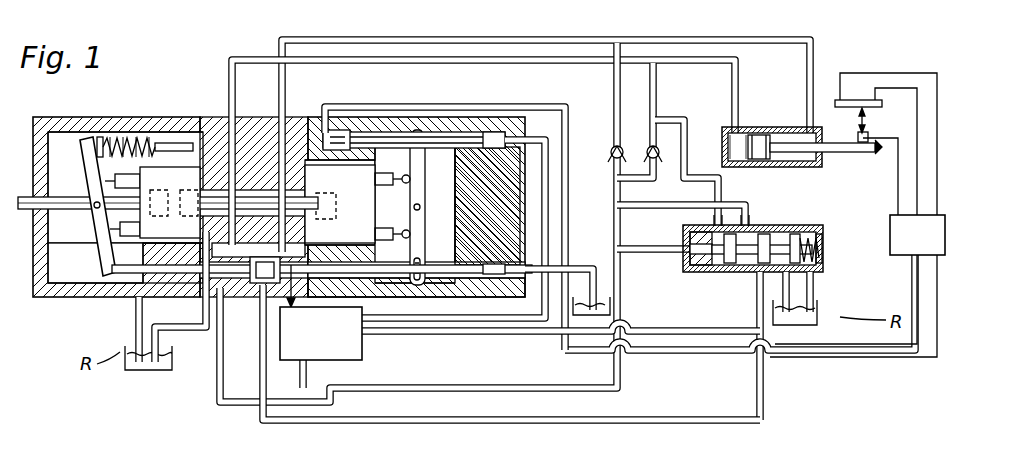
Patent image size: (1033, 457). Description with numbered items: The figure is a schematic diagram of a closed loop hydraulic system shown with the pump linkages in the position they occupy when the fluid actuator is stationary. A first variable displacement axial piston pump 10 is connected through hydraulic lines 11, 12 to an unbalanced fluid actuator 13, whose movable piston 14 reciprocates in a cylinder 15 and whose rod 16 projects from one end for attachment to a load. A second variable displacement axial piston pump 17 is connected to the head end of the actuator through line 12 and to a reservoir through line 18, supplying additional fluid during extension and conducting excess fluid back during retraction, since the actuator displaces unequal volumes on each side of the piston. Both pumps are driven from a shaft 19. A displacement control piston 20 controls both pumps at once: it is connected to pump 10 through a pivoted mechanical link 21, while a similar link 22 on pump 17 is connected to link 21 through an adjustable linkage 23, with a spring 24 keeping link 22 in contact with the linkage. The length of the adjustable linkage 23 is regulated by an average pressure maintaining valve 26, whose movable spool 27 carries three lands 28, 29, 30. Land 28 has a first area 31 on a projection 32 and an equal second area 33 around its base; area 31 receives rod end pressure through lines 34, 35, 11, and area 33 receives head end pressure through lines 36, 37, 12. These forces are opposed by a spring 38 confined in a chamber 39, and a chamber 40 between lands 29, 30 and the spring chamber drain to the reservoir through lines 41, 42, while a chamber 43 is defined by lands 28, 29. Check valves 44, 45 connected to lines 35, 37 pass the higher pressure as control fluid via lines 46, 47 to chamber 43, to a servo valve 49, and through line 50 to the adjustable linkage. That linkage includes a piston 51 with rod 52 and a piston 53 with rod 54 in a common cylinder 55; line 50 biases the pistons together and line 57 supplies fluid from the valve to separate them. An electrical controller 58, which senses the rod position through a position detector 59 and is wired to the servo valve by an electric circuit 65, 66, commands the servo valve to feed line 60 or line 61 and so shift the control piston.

The first variable displacement axial piston pump 10 is at (449, 119).
The hydraulic line 11 is at (373, 40).
The hydraulic line 12 is at (248, 54).
The unbalanced fluid actuator 13 is at (806, 135).
The movable piston 14 is at (800, 165).
The cylinder 15 is at (742, 161).
The rod 16 is at (864, 154).
The second variable displacement axial piston pump 17 is at (176, 118).
The line 18 is at (190, 327).
The shaft 19 is at (68, 197).
The displacement control piston 20 is at (380, 131).
The pivoted mechanical link 21 is at (426, 194).
The link 22 is at (100, 235).
The adjustable linkage 23 is at (253, 300).
The spring 24 is at (133, 140).
The average pressure maintaining valve 26 is at (747, 253).
The movable spool 27 is at (720, 268).
The land 28 is at (727, 264).
The land 29 is at (758, 266).
The land 30 is at (797, 232).
The first area 31 is at (686, 235).
The projection 32 is at (690, 257).
The second area 33 is at (689, 274).
The line 34 is at (680, 246).
The line 35 is at (614, 78).
The line 36 is at (689, 158).
The line 37 is at (657, 81).
The spring 38 is at (825, 240).
The chamber 39 is at (824, 258).
The chamber 40 is at (750, 224).
The line 41 is at (760, 305).
The line 42 is at (812, 290).
The chamber 43 is at (723, 222).
The check valve 44 is at (615, 140).
The check valve 45 is at (657, 140).
The line 46 is at (684, 203).
The line 47 is at (631, 333).
The servo valve 49 is at (363, 359).
The line 50 is at (215, 398).
The piston 51 is at (362, 276).
The rod 52 is at (461, 268).
The piston 53 is at (240, 241).
The rod 54 is at (128, 298).
The common cylinder 55 is at (375, 232).
The line 57 is at (518, 421).
The electrical controller 58 is at (916, 258).
The position detector 59 is at (870, 120).
The line 60 is at (528, 336).
The line 61 is at (455, 336).
The electric circuit 65 is at (898, 344).
The electric circuit 66 is at (892, 358).